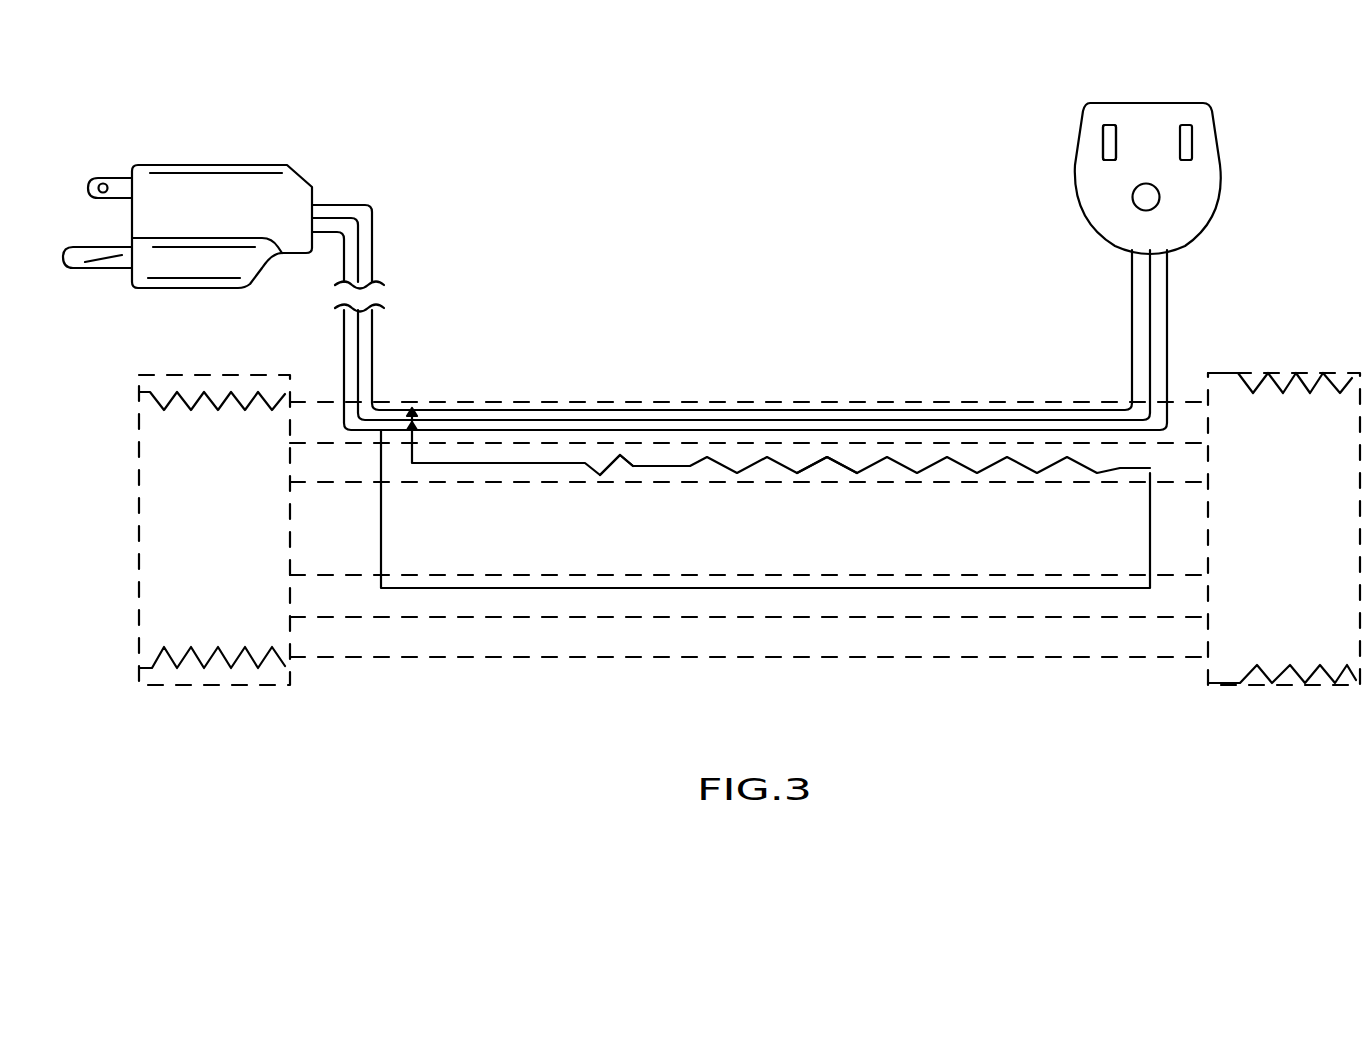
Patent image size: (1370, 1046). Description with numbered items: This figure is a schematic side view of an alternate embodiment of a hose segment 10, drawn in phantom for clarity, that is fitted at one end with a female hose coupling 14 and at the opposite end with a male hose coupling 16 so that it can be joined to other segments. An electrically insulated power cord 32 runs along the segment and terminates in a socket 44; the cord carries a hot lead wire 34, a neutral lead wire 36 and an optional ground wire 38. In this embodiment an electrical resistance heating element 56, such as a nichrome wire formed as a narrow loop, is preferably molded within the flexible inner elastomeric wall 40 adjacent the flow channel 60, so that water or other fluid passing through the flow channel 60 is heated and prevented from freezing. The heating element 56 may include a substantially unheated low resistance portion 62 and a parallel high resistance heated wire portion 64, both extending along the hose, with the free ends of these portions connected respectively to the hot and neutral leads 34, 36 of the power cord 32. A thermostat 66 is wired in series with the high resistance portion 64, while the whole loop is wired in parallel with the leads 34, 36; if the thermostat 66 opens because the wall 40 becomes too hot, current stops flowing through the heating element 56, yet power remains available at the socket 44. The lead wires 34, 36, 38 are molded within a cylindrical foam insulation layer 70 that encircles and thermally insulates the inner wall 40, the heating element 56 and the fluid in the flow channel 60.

The hose segment 10 is at (732, 262).
The female hose coupling 14 is at (200, 687).
The male hose coupling 16 is at (1332, 683).
The power cord 32 is at (392, 352).
The hot lead wire 34 is at (120, 186).
The neutral lead wire 36 is at (1103, 146).
The ground wire 38 is at (127, 270).
The inner elastomeric wall 40 is at (255, 193).
The socket 44 is at (1133, 117).
The heating element 56 is at (930, 458).
The flow channel 60 is at (618, 532).
The low resistance portion 62 is at (1012, 590).
The high resistance heated wire portion 64 is at (843, 462).
The thermostat 66 is at (620, 475).
The insulation layer 70 is at (862, 632).